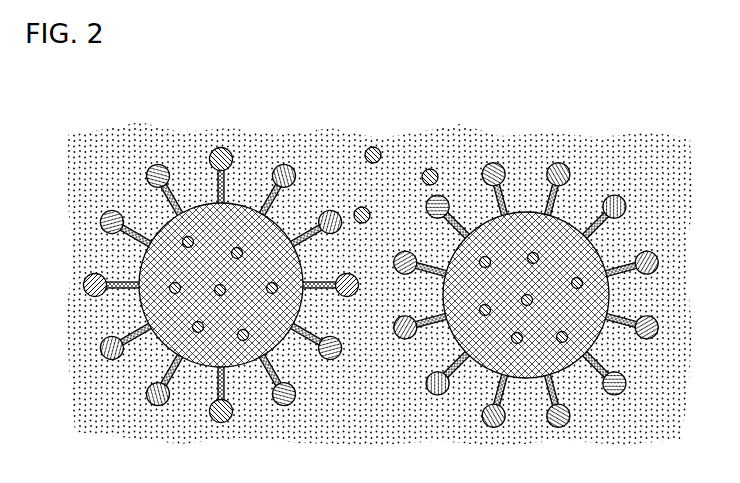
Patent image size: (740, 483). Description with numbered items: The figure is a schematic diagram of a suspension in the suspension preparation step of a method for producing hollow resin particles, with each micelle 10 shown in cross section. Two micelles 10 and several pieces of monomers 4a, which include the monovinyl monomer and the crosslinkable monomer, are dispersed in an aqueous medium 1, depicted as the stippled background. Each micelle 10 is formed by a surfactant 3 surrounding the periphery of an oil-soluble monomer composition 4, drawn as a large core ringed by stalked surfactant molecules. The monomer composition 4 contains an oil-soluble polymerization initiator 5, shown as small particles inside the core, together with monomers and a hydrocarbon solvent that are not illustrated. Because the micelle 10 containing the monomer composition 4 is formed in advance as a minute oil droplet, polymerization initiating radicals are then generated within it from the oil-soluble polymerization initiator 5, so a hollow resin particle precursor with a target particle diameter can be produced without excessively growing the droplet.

The aqueous medium 1 is at (120, 137).
The surfactant 3 is at (163, 168).
The monomer composition 4 is at (249, 216).
The monomer 4a is at (373, 146).
The oil-soluble polymerization initiator 5 is at (198, 335).
The micelle 10 is at (372, 251).